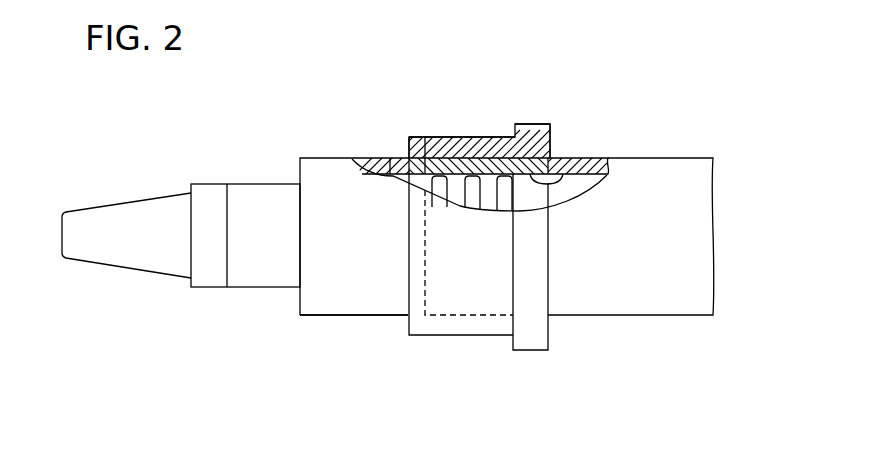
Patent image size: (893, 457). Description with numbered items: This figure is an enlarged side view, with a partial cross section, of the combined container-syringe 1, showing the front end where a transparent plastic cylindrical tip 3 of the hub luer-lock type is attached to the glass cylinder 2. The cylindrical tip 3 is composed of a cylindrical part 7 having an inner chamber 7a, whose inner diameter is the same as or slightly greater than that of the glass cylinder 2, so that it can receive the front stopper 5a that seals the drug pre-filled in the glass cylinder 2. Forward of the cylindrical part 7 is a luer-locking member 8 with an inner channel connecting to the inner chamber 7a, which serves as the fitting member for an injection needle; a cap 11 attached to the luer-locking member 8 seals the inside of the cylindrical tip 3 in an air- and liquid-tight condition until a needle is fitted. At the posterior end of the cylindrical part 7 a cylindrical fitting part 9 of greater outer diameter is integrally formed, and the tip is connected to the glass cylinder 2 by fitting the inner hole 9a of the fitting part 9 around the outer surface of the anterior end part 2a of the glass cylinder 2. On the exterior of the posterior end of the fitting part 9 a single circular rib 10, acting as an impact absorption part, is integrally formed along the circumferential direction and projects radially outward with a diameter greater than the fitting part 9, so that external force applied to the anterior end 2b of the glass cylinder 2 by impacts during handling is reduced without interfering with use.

The combined container-syringe 1 is at (642, 90).
The glass cylinder 2 is at (655, 158).
The anterior end part of the glass cylinder 2a is at (498, 158).
The anterior end of the glass cylinder 2b is at (425, 156).
The cylindrical tip 3 is at (383, 318).
The front stopper 5a is at (472, 187).
The cylindrical part 7 is at (330, 157).
The inner chamber 7a is at (389, 176).
The luer-locking member 8 is at (263, 184).
The cylindrical fitting part 9 is at (478, 137).
The inner hole of the fitting part 9a is at (562, 174).
The circular rib 10 is at (538, 124).
The cap 11 is at (152, 193).